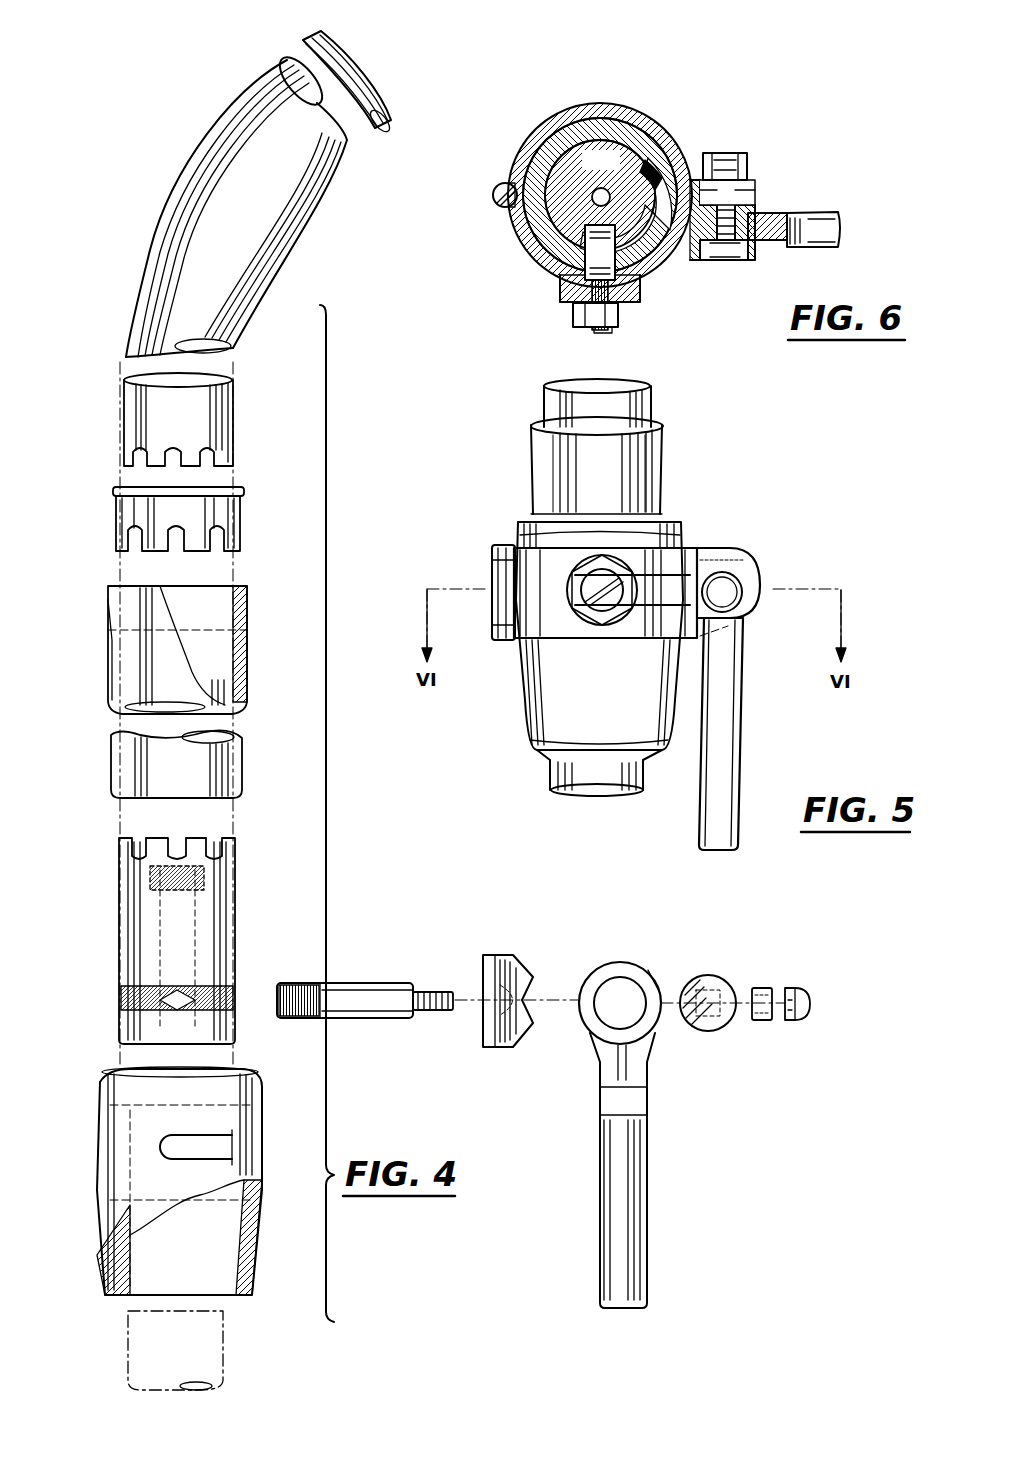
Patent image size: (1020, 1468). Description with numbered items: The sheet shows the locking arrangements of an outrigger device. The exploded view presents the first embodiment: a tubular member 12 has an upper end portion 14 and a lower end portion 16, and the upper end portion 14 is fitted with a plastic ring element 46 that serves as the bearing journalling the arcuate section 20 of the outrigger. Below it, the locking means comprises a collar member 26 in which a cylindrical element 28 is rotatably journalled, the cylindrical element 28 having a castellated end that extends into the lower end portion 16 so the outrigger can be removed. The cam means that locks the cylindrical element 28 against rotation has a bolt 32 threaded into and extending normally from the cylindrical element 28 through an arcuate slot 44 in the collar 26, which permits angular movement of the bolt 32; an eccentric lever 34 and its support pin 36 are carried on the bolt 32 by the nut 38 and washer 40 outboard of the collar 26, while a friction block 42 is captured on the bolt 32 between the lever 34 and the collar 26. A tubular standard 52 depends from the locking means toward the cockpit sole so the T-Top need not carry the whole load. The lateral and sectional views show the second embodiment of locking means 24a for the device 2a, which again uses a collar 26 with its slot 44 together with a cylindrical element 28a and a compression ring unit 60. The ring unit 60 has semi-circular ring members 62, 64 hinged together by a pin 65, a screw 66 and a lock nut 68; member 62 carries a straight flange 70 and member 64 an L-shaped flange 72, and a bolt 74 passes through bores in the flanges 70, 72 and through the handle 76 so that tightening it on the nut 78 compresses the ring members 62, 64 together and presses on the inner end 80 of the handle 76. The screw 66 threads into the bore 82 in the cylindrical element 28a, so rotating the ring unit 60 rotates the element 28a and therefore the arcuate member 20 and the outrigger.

In FIG. 4, the arcuate section 20 is at (262, 232).
In FIG. 5, the arcuate section 20 is at (655, 396).
In FIG. 4, the plastic ring element 46 is at (232, 490).
In FIG. 4, the upper end portion 14 is at (248, 607).
In FIG. 4, the cylindrical element 28 is at (236, 886).
In FIG. 4, the collar member 26 is at (208, 1177).
In FIG. 5, the collar member 26 is at (552, 722).
In FIG. 6, the collar member 26 is at (600, 195).
In FIG. 4, the arcuate slot 44 is at (238, 1152).
In FIG. 6, the arcuate slot 44 is at (645, 250).
In FIG. 4, the tubular standard 52 is at (232, 1334).
In FIG. 5, the tubular standard 52 is at (645, 775).
In FIG. 4, the bolt 32 is at (347, 992).
In FIG. 4, the friction block 42 is at (490, 974).
In FIG. 4, the eccentric lever 34 is at (640, 1193).
In FIG. 4, the support pin 36 is at (708, 978).
In FIG. 4, the washer 40 is at (766, 988).
In FIG. 4, the nut 38 is at (808, 1000).
In FIG. 5, the lower end portion 16 is at (535, 471).
In FIG. 5, the tubular member 12 is at (683, 424).
In FIG. 5, the device 2a is at (678, 470).
In FIG. 5, the locking means 24a is at (535, 665).
In FIG. 5, the compression ring unit 60 is at (632, 571).
In FIG. 6, the compression ring unit 60 is at (648, 104).
In FIG. 5, the pin 65 is at (495, 572).
In FIG. 6, the pin 65 is at (502, 208).
In FIG. 5, the screw 66 is at (600, 583).
In FIG. 6, the screw 66 is at (594, 334).
In FIG. 5, the lock nut 68 is at (582, 578).
In FIG. 6, the lock nut 68 is at (575, 316).
In FIG. 5, the L-shaped flange 72 is at (722, 552).
In FIG. 6, the L-shaped flange 72 is at (705, 262).
In FIG. 5, the bolt 74 is at (742, 588).
In FIG. 6, the bolt 74 is at (745, 262).
In FIG. 5, the handle 76 is at (726, 743).
In FIG. 6, the handle 76 is at (833, 218).
In FIG. 6, the semi-circular ring member 62 is at (596, 104).
In FIG. 6, the cylindrical element 28a is at (620, 172).
In FIG. 6, the semi-circular ring member 64 is at (565, 278).
In FIG. 6, the bore 82 is at (585, 252).
In FIG. 6, the nut 78 is at (728, 154).
In FIG. 6, the straight flange 70 is at (752, 182).
In FIG. 6, the inner end 80 is at (780, 214).